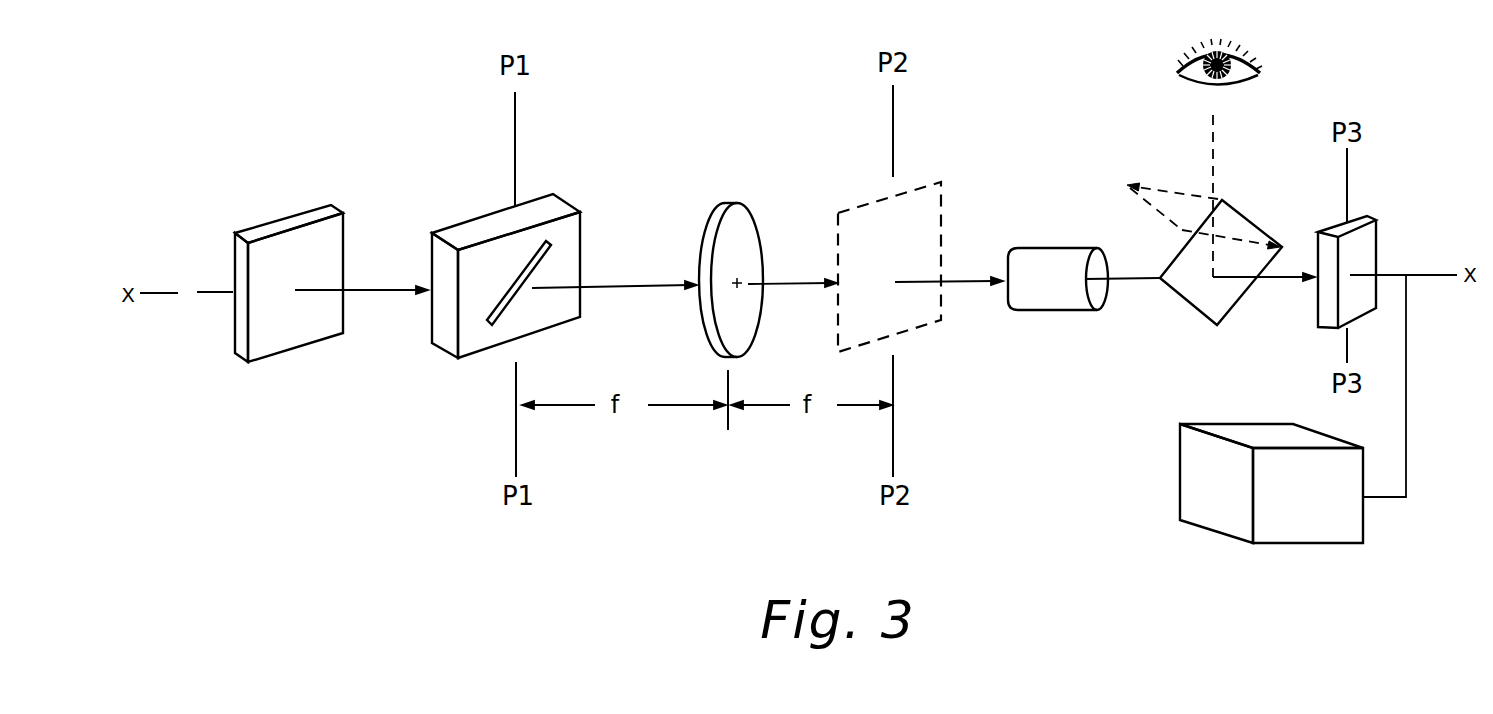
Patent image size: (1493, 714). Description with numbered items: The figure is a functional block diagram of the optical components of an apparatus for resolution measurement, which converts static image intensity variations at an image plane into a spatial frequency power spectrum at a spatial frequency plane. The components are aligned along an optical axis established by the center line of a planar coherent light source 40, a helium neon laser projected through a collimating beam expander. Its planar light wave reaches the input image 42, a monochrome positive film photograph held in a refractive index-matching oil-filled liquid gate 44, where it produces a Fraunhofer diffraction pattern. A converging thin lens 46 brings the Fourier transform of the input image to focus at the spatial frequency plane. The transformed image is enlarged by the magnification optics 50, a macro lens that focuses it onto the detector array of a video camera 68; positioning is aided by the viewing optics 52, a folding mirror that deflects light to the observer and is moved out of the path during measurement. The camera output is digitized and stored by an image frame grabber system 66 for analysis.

The planar coherent light source 40 is at (283, 220).
The input image 42 is at (516, 284).
The liquid gate 44 is at (473, 218).
The converging thin lens 46 is at (717, 207).
The magnification optics 50 is at (1055, 248).
The viewing optics 52 is at (1230, 310).
The image frame grabber system 66 is at (1180, 466).
The video camera 68 is at (1363, 245).